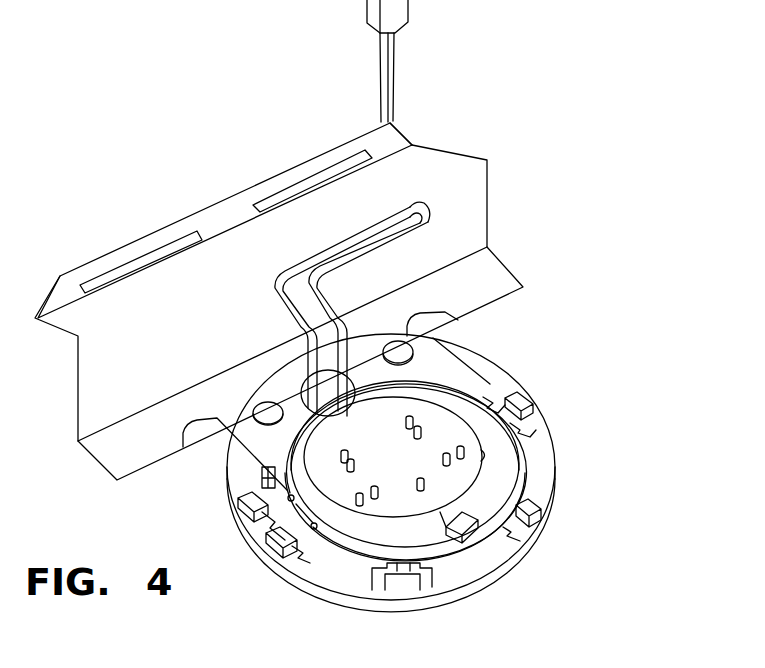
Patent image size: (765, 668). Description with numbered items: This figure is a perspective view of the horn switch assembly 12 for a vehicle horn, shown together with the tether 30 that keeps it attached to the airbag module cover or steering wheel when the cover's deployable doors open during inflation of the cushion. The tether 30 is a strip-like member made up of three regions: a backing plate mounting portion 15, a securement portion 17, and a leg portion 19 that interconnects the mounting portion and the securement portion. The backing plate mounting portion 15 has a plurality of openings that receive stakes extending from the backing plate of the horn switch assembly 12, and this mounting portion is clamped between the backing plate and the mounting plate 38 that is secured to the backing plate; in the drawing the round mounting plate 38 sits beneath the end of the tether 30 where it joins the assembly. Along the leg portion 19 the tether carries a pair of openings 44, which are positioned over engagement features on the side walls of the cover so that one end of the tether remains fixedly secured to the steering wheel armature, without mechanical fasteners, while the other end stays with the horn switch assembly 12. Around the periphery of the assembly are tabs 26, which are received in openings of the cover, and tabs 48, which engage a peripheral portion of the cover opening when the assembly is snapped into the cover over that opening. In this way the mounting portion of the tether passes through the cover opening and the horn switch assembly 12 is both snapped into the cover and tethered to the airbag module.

The horn switch assembly 12 is at (568, 167).
The tether 30 is at (556, 277).
The leg portion 19 is at (450, 178).
The openings 44 is at (140, 262).
The securement portion 17 is at (390, 123).
The backing plate mounting portion 15 is at (447, 367).
The mounting plate 38 is at (447, 428).
The tabs 26 is at (541, 512).
The tabs 48 is at (463, 527).